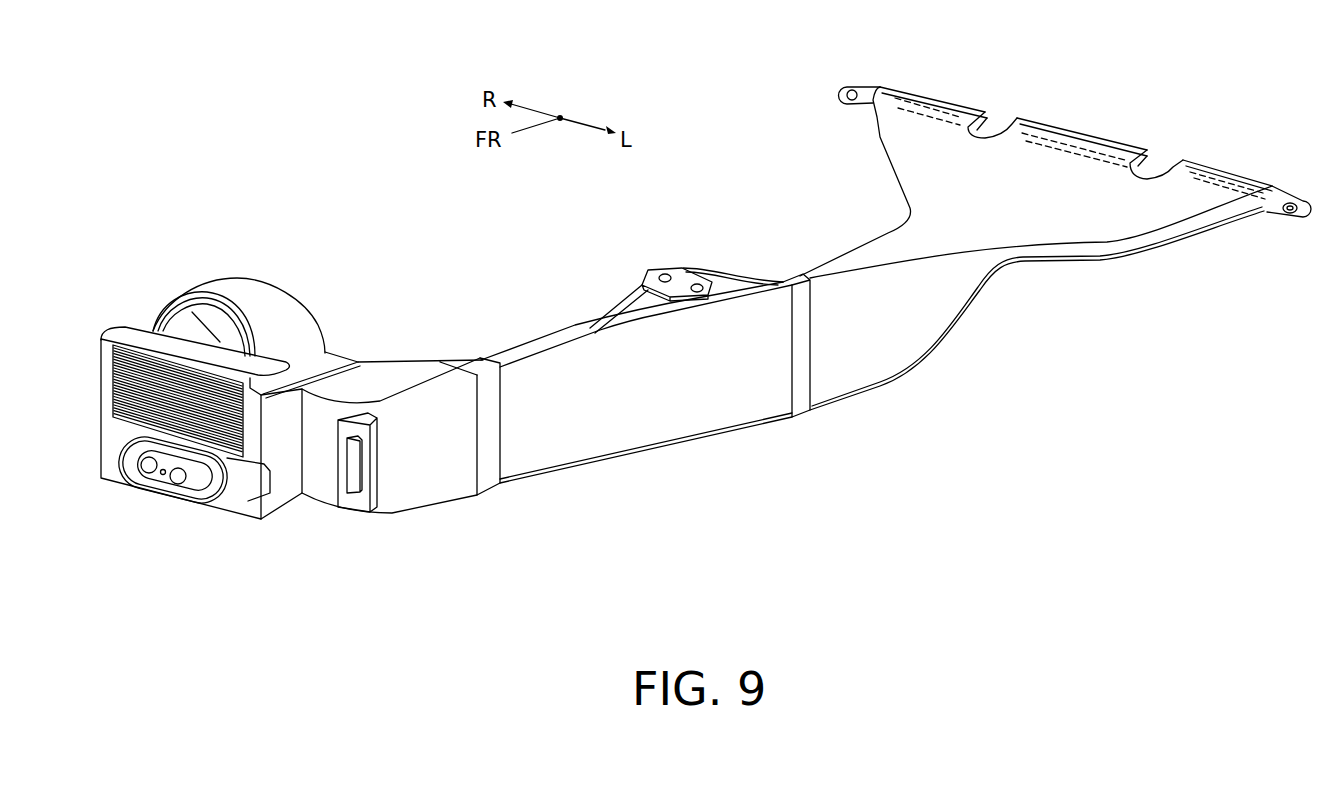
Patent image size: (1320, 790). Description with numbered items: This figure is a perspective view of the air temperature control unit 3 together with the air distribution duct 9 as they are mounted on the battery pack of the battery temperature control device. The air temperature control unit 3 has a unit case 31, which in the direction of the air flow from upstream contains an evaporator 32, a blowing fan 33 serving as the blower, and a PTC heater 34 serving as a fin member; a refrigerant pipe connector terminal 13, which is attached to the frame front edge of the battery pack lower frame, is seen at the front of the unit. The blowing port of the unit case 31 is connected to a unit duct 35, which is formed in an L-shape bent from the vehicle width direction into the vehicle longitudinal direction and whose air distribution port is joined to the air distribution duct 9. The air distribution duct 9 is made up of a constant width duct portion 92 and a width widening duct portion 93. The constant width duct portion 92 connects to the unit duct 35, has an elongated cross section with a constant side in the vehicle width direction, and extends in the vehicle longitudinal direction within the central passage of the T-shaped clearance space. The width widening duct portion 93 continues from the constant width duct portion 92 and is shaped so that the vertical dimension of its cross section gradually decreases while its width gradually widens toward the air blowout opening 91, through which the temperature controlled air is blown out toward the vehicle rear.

The air temperature control unit 3 is at (236, 263).
The unit case 31 is at (298, 298).
The evaporator 32 is at (142, 372).
The blowing fan 33 is at (257, 294).
The PTC heater 34 is at (353, 501).
The unit duct 35 is at (421, 382).
The refrigerant pipe connector terminal 13 is at (162, 481).
The air distribution duct 9 is at (762, 218).
The air blowout opening 91 is at (925, 86).
The constant width duct portion 92 is at (668, 407).
The width widening duct portion 93 is at (899, 333).